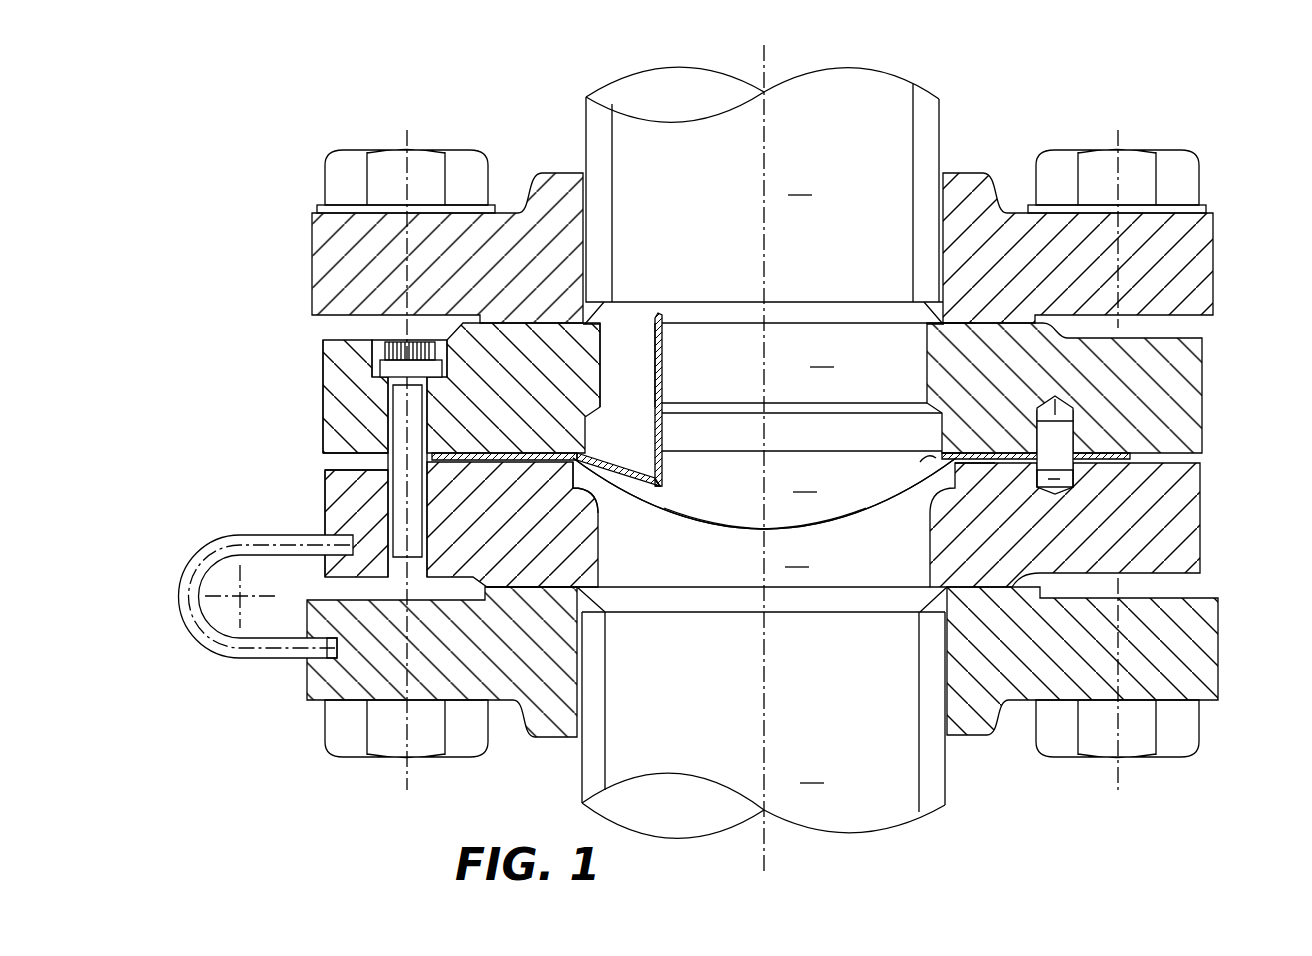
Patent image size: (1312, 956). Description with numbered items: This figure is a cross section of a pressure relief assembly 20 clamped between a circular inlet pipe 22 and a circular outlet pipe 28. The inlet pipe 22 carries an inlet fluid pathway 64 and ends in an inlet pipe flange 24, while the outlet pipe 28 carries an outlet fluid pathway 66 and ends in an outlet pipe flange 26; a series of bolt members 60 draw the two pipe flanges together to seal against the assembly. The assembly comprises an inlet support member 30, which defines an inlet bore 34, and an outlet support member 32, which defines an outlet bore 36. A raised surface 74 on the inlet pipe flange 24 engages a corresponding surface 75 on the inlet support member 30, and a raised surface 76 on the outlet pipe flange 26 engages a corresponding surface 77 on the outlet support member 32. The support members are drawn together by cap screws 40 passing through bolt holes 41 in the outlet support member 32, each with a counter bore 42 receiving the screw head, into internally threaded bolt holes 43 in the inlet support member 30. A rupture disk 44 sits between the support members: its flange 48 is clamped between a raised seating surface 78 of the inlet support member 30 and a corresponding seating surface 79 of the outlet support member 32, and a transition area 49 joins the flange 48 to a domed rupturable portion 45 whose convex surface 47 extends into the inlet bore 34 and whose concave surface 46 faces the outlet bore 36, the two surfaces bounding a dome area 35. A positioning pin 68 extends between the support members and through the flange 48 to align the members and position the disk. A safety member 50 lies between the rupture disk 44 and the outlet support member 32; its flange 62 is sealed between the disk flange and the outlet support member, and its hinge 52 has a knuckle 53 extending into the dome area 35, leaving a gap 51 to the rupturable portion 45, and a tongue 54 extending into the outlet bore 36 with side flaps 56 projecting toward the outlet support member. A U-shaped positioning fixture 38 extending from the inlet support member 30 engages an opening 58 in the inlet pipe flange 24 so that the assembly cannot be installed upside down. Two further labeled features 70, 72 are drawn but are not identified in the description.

The pressure relief assembly 20 is at (294, 386).
The inlet pipe 22 is at (945, 805).
The inlet pipe flange 24 is at (1220, 642).
The outlet pipe flange 26 is at (1190, 246).
The outlet pipe 28 is at (940, 99).
The inlet support member 30 is at (1203, 517).
The outlet support member 32 is at (1205, 430).
The inlet bore 34 is at (764, 564).
The dome area 35 is at (802, 471).
The outlet bore 36 is at (802, 368).
The U-shaped positioning fixture 38 is at (245, 608).
The cap screw 40 is at (385, 343).
The bolt hole 41 is at (385, 460).
The counter bore 42 is at (435, 342).
The internally threaded bolt hole 43 is at (398, 572).
The rupture disk 44 is at (666, 522).
The rupturable portion 45 is at (830, 520).
The concave surface 46 is at (703, 520).
The convex surface 47 is at (708, 515).
The flange 48 is at (1130, 457).
The transition area 49 is at (920, 464).
The safety member 50 is at (586, 399).
The gap 51 is at (637, 490).
The hinge 52 is at (618, 452).
The knuckle 53 is at (660, 485).
The tongue 54 is at (665, 375).
The side flaps 56 is at (628, 343).
The opening 58 is at (302, 662).
The bolt members 60 is at (347, 160).
The flange 62 is at (1078, 450).
The inlet fluid pathway 64 is at (811, 770).
The outlet fluid pathway 66 is at (799, 182).
The positioning pin 68 is at (1073, 485).
The lower hub pin hole 70 is at (1078, 490).
The upper hub pin hole 72 is at (1072, 445).
The raised surface 74 is at (583, 592).
The corresponding surface 75 is at (580, 590).
The raised surface 76 is at (965, 315).
The corresponding surface 77 is at (968, 313).
The raised seating surface 78 is at (993, 465).
The seating surface 79 is at (960, 455).